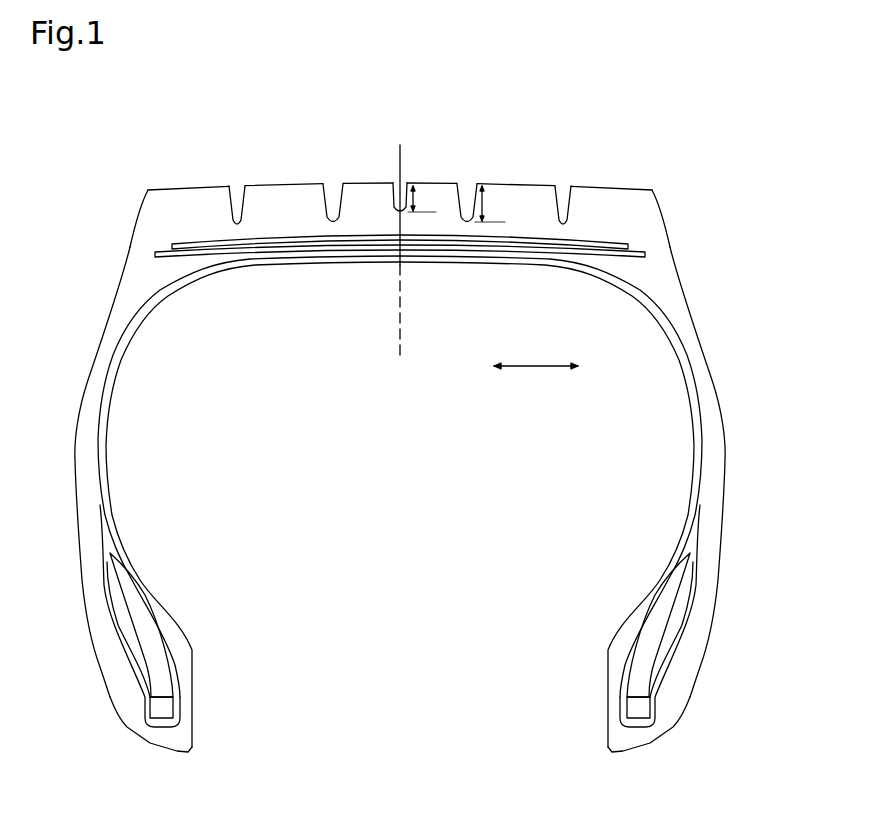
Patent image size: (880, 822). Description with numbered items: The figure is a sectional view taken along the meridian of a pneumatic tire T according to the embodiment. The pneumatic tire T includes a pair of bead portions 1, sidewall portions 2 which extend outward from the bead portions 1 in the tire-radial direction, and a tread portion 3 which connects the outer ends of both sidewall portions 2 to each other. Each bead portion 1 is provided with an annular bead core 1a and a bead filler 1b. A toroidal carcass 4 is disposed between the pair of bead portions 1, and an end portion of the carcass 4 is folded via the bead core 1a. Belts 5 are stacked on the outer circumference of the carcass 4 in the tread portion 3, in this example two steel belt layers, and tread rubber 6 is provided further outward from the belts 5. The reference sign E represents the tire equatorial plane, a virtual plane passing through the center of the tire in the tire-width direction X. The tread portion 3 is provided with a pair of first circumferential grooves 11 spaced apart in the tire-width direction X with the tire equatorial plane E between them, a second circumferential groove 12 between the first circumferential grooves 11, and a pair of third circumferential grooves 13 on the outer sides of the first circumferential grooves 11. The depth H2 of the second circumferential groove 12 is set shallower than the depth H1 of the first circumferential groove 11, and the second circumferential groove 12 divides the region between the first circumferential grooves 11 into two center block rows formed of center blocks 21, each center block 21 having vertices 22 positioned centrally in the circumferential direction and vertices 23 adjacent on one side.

The bead portion 1 is at (434, 628).
The bead core 1a is at (165, 706).
The bead filler 1b is at (150, 630).
The sidewall portion 2 is at (69, 436).
The tread portion 3 is at (400, 151).
The carcass 4 is at (690, 485).
The belt 5 is at (565, 250).
The tread rubber 6 is at (620, 187).
The first circumferential groove 11 is at (332, 196).
The second circumferential groove 12 is at (403, 186).
The third circumferential groove 13 is at (236, 186).
The center block 21 is at (368, 190).
The vertex 22 is at (283, 195).
The vertex 23 is at (190, 193).
The pneumatic tire T is at (152, 330).
The tire equatorial plane E is at (400, 360).
The tire-width direction X is at (536, 355).
The depth of first circumferential groove H1 is at (490, 204).
The depth of second circumferential groove H2 is at (422, 199).